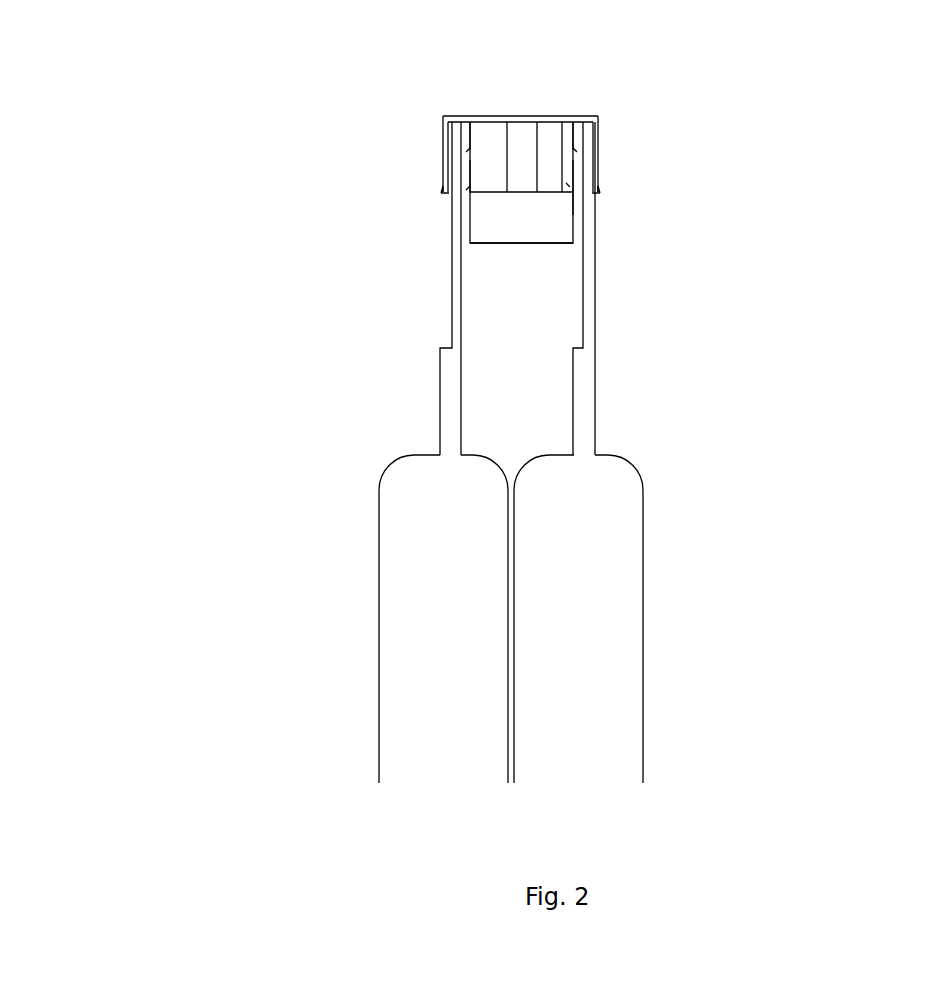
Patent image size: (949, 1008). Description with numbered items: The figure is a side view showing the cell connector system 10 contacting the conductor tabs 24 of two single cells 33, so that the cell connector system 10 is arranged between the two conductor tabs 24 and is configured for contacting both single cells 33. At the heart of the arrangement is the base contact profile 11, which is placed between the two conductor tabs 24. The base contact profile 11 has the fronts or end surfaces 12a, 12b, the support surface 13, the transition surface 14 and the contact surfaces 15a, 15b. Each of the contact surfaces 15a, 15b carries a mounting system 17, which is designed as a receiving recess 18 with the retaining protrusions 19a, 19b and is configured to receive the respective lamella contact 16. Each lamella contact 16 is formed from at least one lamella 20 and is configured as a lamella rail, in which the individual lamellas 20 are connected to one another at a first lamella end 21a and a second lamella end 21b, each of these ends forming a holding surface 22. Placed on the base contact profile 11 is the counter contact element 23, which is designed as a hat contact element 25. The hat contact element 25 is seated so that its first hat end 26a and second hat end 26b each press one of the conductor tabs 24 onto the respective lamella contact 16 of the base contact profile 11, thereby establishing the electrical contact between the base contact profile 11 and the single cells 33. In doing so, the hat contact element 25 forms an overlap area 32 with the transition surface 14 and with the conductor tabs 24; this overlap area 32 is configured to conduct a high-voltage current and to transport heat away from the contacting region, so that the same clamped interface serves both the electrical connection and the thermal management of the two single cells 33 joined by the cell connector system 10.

The cell connector system 10 is at (488, 236).
The base contact profile 11 is at (585, 175).
The end surface 12a is at (577, 238).
The end surface 12b is at (573, 191).
The support surface 13 is at (492, 245).
The transition surface 14 is at (470, 123).
The contact surface 15a is at (458, 192).
The contact surface 15b is at (728, 281).
The lamella contact 16 is at (442, 157).
The lamella 20 is at (443, 153).
The mounting system 17 is at (416, 104).
The receiving recess 18 is at (442, 127).
The retaining protrusion 19a is at (470, 148).
The retaining protrusion 19b is at (469, 182).
The first lamella end 21a is at (566, 140).
The second lamella end 21b is at (569, 145).
The holding surface 22 is at (521, 175).
The counter contact element 23 is at (505, 125).
The hat contact element 25 is at (482, 124).
The conductor tab 24 is at (446, 195).
The first hat end 26a is at (441, 175).
The second hat end 26b is at (598, 178).
The overlap area 32 is at (450, 121).
The single cell 33 is at (455, 613).